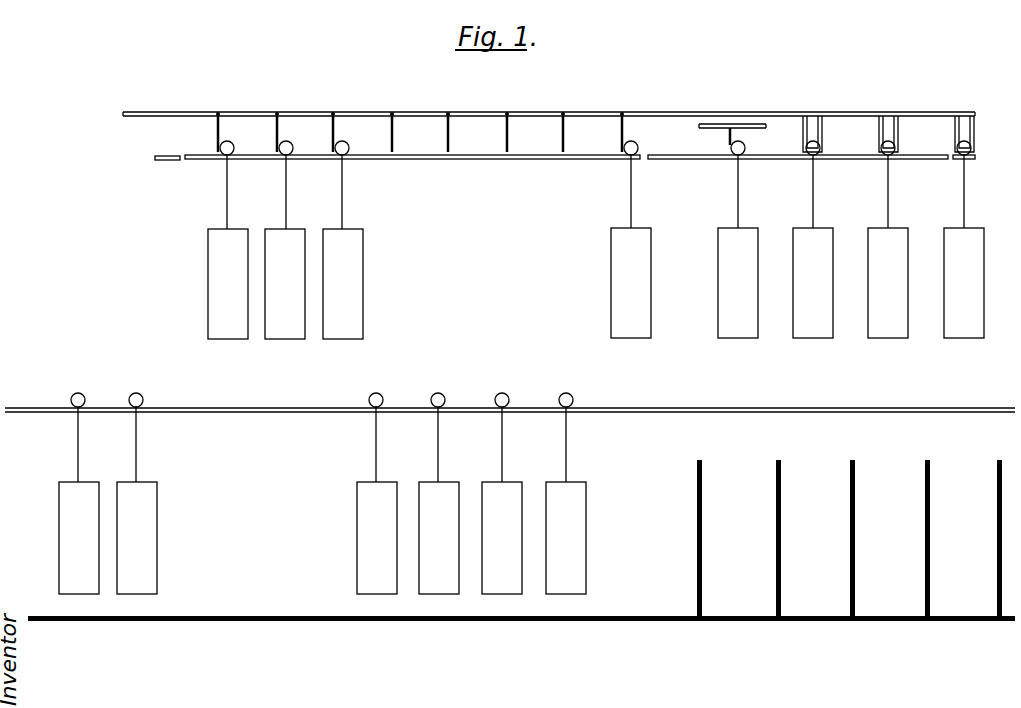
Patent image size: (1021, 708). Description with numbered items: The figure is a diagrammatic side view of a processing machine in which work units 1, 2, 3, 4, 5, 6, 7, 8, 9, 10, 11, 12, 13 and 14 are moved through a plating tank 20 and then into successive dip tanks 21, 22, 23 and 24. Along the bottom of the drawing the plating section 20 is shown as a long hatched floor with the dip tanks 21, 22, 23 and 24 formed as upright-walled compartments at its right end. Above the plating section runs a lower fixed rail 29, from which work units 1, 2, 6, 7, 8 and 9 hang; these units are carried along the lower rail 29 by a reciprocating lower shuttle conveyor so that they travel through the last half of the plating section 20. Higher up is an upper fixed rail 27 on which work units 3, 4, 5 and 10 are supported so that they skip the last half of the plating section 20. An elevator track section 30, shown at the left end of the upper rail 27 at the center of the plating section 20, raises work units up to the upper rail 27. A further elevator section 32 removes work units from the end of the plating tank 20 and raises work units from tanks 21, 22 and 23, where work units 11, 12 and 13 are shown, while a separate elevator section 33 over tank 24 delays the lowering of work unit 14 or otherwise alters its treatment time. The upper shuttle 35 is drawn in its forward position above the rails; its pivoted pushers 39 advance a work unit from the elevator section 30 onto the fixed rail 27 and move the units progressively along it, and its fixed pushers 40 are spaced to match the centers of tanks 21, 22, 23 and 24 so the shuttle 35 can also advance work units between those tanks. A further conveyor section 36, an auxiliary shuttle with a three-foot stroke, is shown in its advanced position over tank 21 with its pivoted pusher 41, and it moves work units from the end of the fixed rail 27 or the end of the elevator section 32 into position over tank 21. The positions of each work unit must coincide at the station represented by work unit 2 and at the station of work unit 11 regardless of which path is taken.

The work unit 1 is at (79, 493).
The work unit 2 is at (137, 493).
The work unit 3 is at (228, 247).
The work unit 4 is at (285, 247).
The work unit 5 is at (343, 247).
The work unit 6 is at (377, 493).
The work unit 7 is at (439, 493).
The work unit 8 is at (502, 493).
The work unit 9 is at (566, 493).
The work unit 10 is at (631, 246).
The work unit 11 is at (738, 246).
The work unit 12 is at (813, 246).
The work unit 13 is at (888, 246).
The work unit 14 is at (964, 246).
The plating tank 20 is at (603, 618).
The dip tank 21 is at (735, 618).
The dip tank 22 is at (814, 618).
The dip tank 23 is at (889, 618).
The dip tank 24 is at (954, 618).
The upper fixed rail 27 is at (437, 159).
The lower fixed rail 29 is at (663, 410).
The elevator track section 30 is at (171, 160).
The elevator section 32 is at (672, 159).
The elevator section 33 is at (966, 159).
The upper shuttle 35 is at (383, 111).
The conveyor section 36 is at (743, 126).
The pushers 39 is at (221, 138).
The pushers 40 is at (823, 134).
The pusher 41 is at (728, 141).